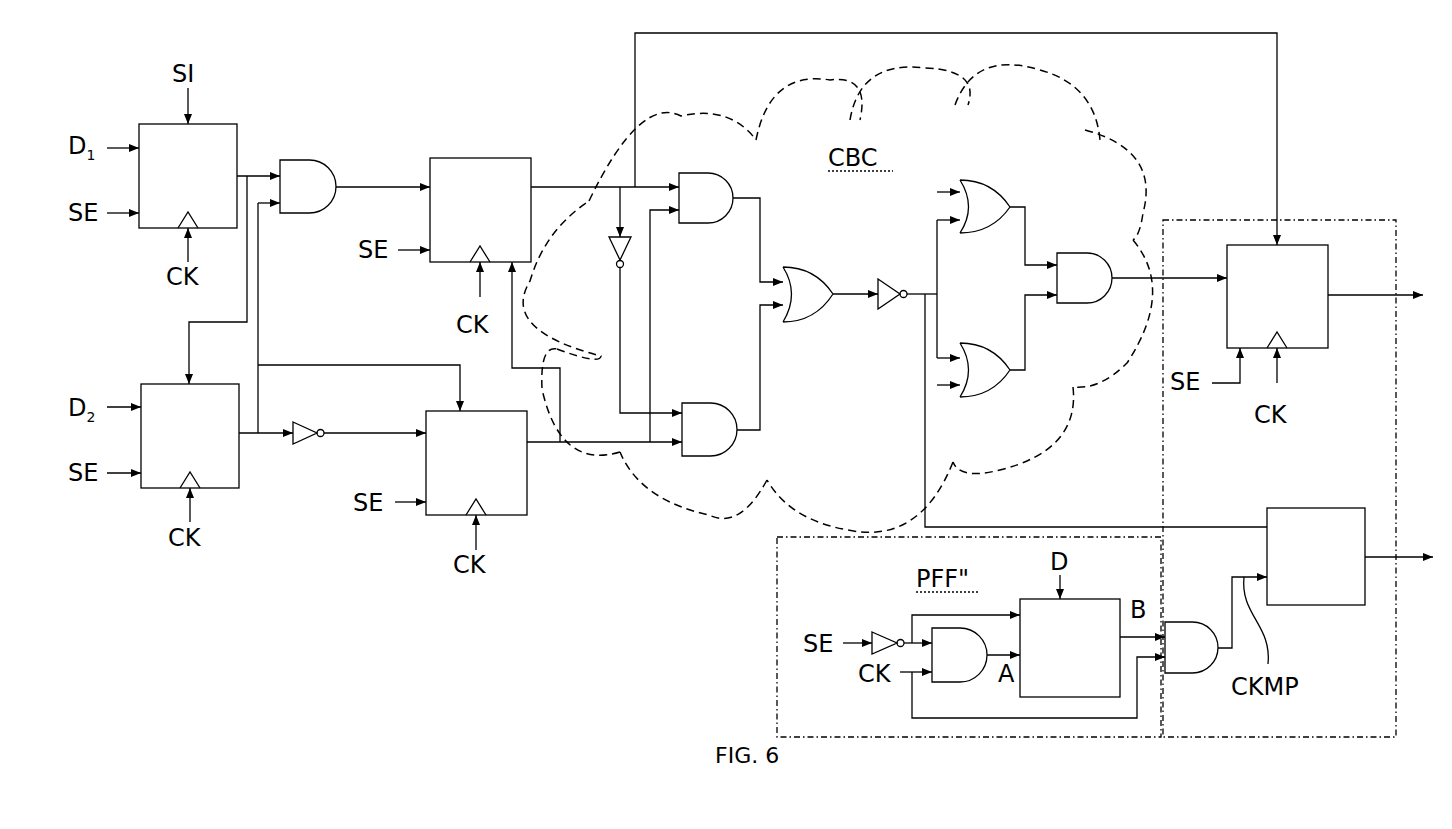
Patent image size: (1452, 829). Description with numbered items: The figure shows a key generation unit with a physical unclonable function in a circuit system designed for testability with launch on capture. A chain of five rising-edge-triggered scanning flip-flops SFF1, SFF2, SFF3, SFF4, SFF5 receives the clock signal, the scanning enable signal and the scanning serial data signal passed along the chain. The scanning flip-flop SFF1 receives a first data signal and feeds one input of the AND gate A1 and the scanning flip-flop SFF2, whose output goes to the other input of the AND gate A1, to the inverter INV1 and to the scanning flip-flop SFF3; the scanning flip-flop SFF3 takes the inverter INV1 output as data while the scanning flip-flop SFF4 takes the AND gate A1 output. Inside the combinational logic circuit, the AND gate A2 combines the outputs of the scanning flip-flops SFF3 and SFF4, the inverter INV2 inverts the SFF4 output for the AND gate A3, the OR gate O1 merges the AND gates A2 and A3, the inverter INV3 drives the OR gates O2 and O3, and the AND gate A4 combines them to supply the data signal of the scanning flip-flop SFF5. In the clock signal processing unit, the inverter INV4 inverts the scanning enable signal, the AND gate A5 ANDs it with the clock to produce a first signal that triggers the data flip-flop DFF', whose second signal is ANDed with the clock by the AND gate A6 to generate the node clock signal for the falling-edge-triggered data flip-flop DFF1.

The scanning flip-flop SFF1 is at (188, 176).
The scanning flip-flop SFF2 is at (190, 436).
The scanning flip-flop SFF3 is at (476, 463).
The scanning flip-flop SFF4 is at (480, 210).
The scanning flip-flop SFF5 is at (1277, 296).
The AND gate A1 is at (308, 170).
The AND gate A2 is at (706, 180).
The AND gate A3 is at (709, 412).
The AND gate A4 is at (1084, 260).
The AND gate A5 is at (959, 675).
The AND gate A6 is at (1191, 632).
The OR gate O1 is at (808, 275).
The OR gate O2 is at (985, 185).
The OR gate O3 is at (985, 354).
The inverter INV1 is at (297, 452).
The inverter INV2 is at (589, 262).
The inverter INV3 is at (877, 272).
The inverter INV4 is at (868, 624).
The data flip-flop DFF' is at (1070, 648).
The data flip-flop DFF1 is at (1316, 556).